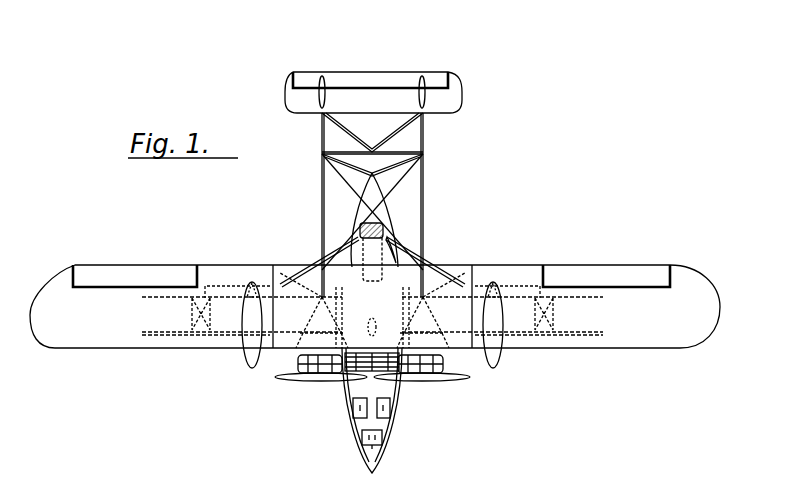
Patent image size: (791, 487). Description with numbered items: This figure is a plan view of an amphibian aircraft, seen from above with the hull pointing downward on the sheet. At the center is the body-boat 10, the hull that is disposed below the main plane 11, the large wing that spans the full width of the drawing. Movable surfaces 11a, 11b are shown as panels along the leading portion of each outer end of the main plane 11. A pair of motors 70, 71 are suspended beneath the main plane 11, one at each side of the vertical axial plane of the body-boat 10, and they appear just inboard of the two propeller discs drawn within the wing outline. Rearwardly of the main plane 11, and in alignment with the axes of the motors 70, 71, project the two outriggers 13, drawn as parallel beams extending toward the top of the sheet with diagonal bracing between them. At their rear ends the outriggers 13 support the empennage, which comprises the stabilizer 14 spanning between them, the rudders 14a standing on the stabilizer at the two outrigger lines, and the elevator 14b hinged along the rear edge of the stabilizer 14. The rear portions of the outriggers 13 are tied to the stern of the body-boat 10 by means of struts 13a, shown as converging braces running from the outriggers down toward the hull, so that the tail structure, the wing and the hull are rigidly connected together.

The body-boat 10 is at (388, 426).
The main plane 11 is at (375, 303).
The left aileron 11a is at (150, 246).
The right aileron 11b is at (622, 249).
The outriggers 13 is at (465, 194).
The struts 13a is at (355, 164).
The stabilizer 14 is at (392, 76).
The rudders 14a is at (394, 60).
The elevator 14b is at (333, 58).
The motor 70 is at (307, 370).
The motor 71 is at (437, 370).